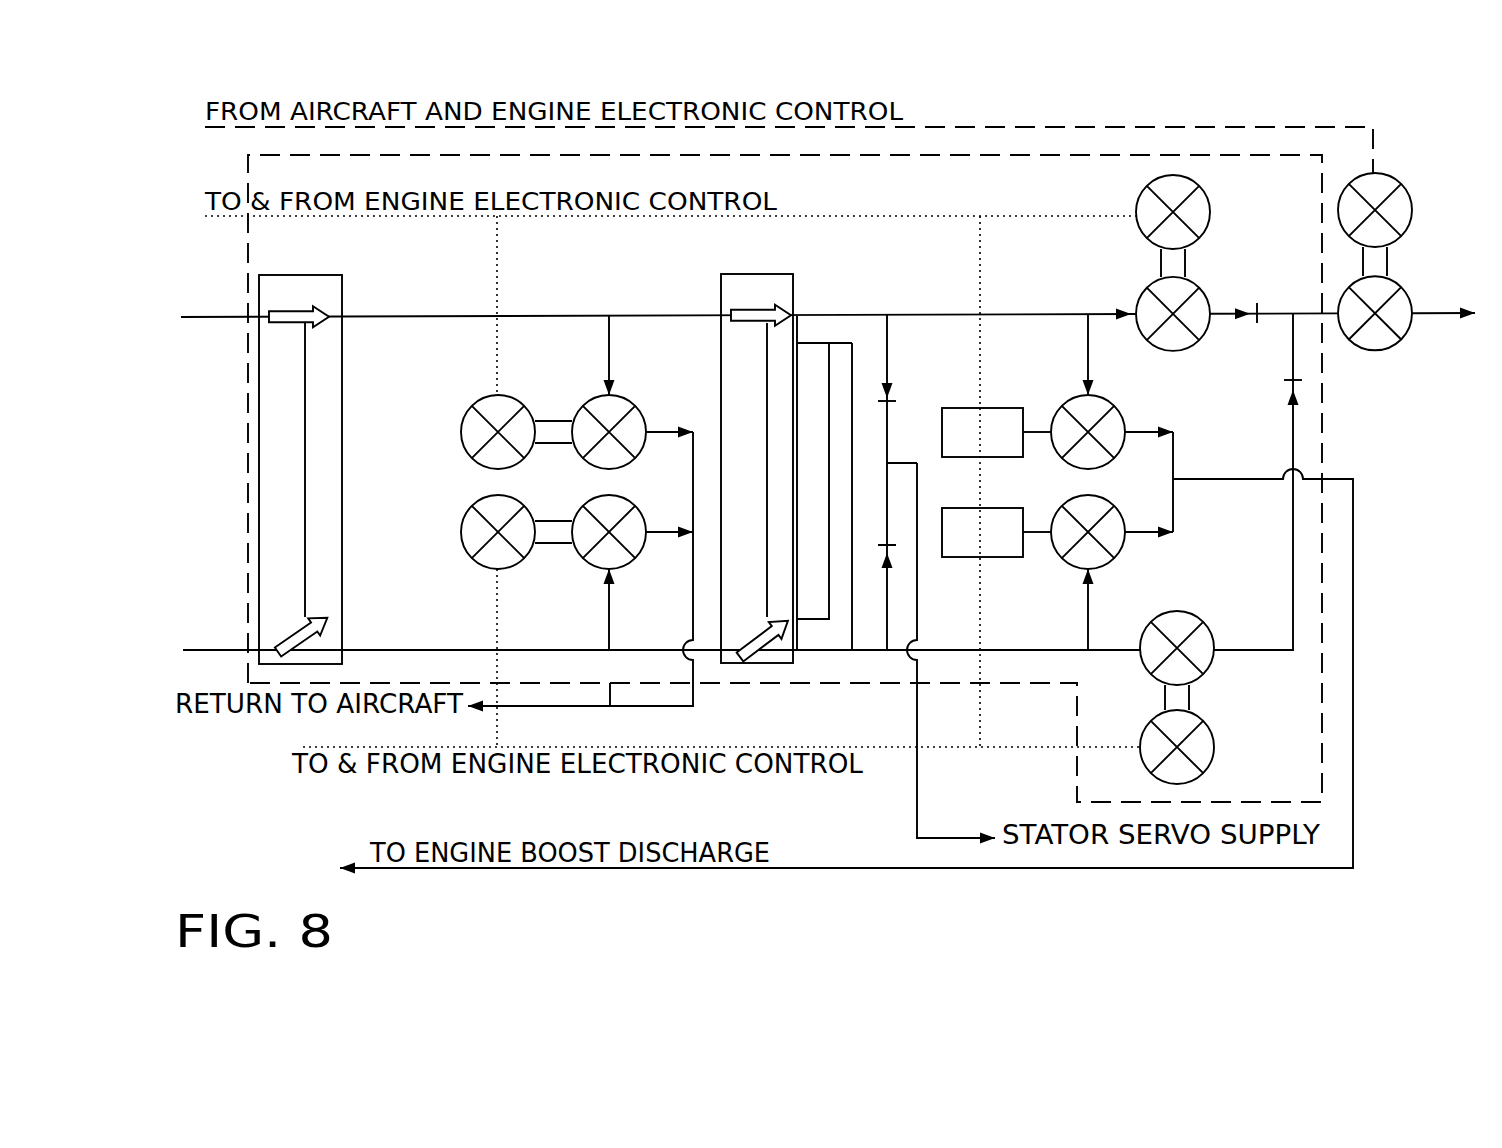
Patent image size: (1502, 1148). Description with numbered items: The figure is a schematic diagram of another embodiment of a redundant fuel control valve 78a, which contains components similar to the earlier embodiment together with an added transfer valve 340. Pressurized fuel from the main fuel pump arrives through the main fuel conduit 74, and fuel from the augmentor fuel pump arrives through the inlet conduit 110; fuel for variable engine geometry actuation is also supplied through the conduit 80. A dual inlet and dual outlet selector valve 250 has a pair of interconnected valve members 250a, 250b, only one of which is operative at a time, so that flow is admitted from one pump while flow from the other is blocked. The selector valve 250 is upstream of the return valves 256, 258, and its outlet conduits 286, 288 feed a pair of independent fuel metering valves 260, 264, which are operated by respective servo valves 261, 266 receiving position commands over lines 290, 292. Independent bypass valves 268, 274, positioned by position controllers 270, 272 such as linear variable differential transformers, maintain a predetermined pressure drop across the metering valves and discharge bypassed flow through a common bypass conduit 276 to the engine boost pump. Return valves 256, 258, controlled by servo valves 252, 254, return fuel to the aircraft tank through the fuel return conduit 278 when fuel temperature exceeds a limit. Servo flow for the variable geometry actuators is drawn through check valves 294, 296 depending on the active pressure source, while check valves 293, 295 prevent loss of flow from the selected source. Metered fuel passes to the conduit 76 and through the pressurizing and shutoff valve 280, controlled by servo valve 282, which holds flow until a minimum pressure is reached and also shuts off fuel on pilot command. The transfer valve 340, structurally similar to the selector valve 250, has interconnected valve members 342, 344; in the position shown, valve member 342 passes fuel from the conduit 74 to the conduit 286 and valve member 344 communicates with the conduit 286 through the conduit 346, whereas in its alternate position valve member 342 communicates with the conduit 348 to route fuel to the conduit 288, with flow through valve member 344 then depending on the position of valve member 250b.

The conduit 74 is at (237, 320).
The conduit 76 is at (1428, 320).
The redundant fuel control valve 78a is at (1323, 433).
The conduit 80 is at (937, 836).
The inlet conduit 110 is at (242, 647).
The selector valve 250 is at (280, 275).
The valve member 250a is at (290, 308).
The valve member 250b is at (330, 627).
The servo valve 252 is at (462, 422).
The servo valve 254 is at (462, 522).
The return valve 256 is at (630, 400).
The return valve 258 is at (590, 503).
The fuel metering valve 260 is at (1140, 300).
The servo valve 261 is at (1137, 200).
The fuel metering valve 264 is at (1208, 665).
The servo valve 266 is at (1210, 758).
The bypass valve 268 is at (1110, 405).
The position controller 270 is at (992, 407).
The position controller 272 is at (992, 507).
The bypass valve 274 is at (1110, 562).
The bypass conduit 276 is at (1193, 481).
The fuel return conduit 278 is at (610, 683).
The pressurizing and shutoff valve 280 is at (1398, 285).
The servo valve 282 is at (1395, 180).
The outlet conduit 286 is at (608, 352).
The outlet conduit 288 is at (608, 618).
The line 290 is at (842, 214).
The line 292 is at (607, 747).
The check valve 293 is at (1237, 300).
The check valve 294 is at (892, 392).
The check valve 295 is at (1290, 397).
The check valve 296 is at (895, 558).
The transfer valve 340 is at (740, 274).
The valve member 342 is at (750, 308).
The valve member 344 is at (752, 662).
The conduit 346 is at (812, 622).
The conduit 348 is at (823, 360).